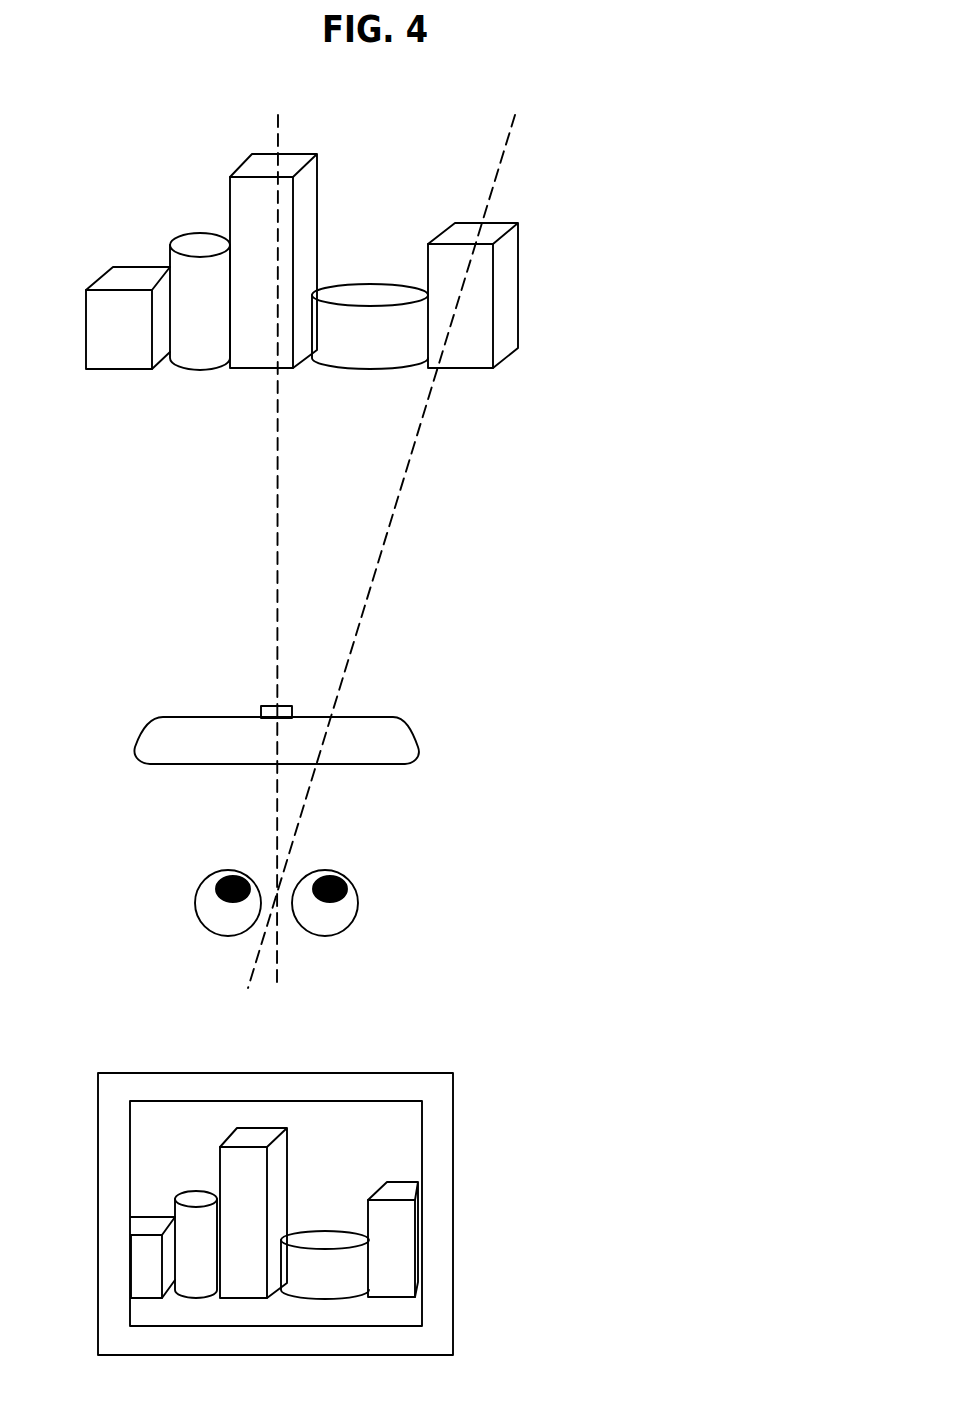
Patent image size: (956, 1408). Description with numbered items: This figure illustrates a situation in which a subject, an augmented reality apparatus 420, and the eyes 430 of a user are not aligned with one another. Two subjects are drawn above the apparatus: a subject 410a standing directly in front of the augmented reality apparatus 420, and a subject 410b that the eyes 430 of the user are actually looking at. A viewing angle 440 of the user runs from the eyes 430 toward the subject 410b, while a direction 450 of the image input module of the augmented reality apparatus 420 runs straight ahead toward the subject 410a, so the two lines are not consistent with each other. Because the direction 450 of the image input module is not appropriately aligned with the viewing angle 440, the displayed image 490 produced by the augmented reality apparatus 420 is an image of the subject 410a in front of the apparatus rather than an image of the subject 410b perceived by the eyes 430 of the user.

The subject 410a is at (290, 160).
The subject 410b is at (502, 270).
The augmented reality apparatus 420 is at (418, 750).
The eyes of a user 430 is at (388, 893).
The viewing angle 440 is at (378, 572).
The direction of the image input module 450 is at (278, 565).
The displayed image 490 is at (453, 1215).